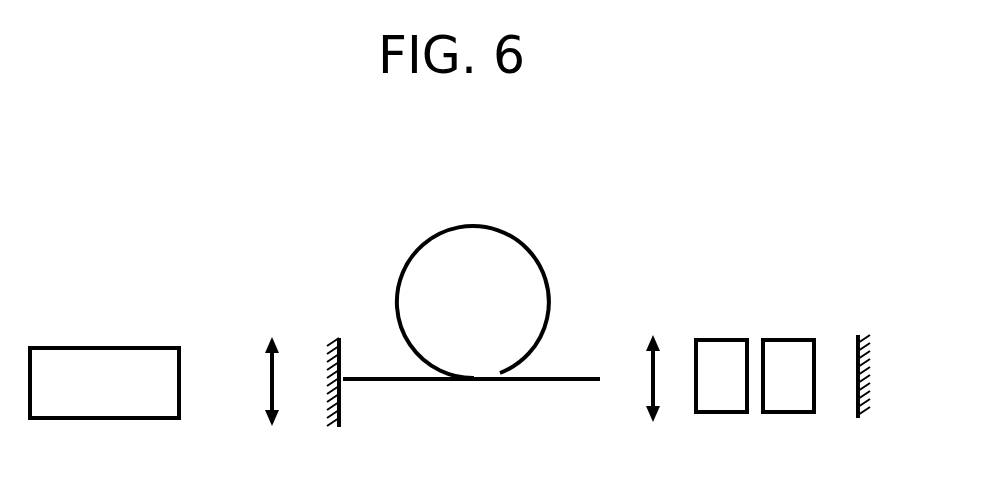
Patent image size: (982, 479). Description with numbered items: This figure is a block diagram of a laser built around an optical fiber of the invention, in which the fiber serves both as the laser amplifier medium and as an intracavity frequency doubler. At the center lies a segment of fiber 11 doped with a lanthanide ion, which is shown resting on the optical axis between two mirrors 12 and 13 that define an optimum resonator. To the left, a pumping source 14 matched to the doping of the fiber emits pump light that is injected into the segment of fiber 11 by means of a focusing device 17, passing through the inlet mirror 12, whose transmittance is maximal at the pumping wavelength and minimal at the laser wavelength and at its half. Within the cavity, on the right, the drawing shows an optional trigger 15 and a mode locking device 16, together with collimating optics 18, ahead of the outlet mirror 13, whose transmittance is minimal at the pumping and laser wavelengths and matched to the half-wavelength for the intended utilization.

The segment of fiber 11 is at (549, 293).
The inlet mirror 12 is at (340, 400).
The outlet mirror 13 is at (853, 390).
The pumping source 14 is at (90, 397).
The trigger 15 is at (715, 393).
The mode locking device 16 is at (782, 392).
The focusing device 17 is at (268, 392).
The collimating optics 18 is at (648, 390).